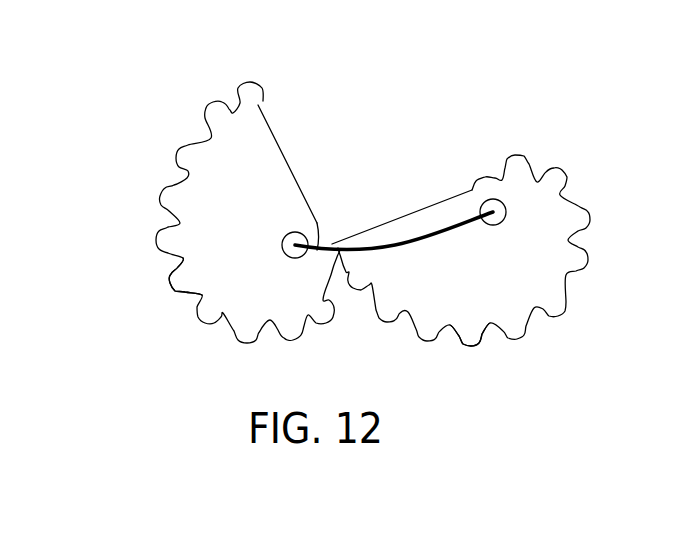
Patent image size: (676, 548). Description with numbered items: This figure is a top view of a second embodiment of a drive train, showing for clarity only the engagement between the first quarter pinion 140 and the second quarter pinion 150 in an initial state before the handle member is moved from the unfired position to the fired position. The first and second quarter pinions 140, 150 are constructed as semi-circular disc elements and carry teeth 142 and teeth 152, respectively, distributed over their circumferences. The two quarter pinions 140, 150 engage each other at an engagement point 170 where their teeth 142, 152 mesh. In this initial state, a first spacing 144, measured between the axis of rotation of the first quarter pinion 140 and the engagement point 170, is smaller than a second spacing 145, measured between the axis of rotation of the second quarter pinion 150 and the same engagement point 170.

The first quarter pinion 140 is at (257, 142).
The teeth 142 is at (177, 280).
The first spacing 144 is at (316, 230).
The second spacing 145 is at (436, 228).
The second quarter pinion 150 is at (503, 272).
The teeth 152 is at (473, 340).
The engagement point 170 is at (338, 258).